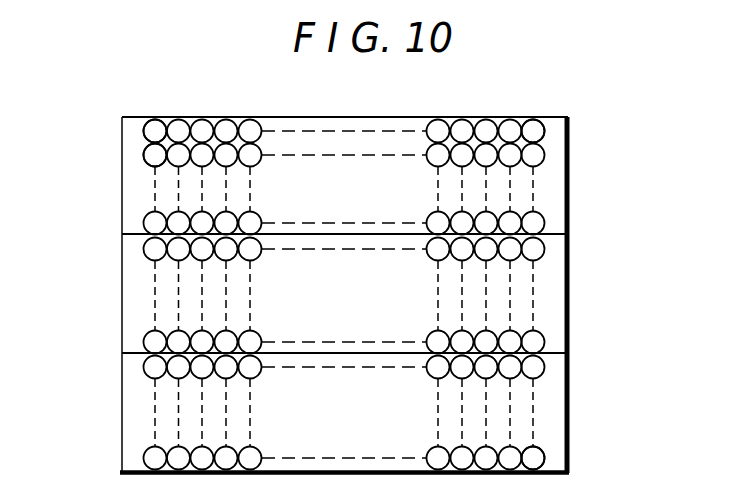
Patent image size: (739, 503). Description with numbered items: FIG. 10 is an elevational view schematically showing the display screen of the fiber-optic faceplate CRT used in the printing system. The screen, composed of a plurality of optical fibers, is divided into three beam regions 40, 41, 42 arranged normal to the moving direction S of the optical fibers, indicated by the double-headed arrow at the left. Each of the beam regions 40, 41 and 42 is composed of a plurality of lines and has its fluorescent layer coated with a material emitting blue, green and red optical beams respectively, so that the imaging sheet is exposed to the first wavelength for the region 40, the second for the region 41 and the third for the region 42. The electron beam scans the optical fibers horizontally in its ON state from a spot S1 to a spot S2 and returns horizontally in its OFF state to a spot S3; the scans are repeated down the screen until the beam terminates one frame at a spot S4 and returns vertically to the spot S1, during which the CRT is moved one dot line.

The beam region 40 is at (552, 171).
The beam region 41 is at (550, 273).
The beam region 42 is at (553, 385).
The spot S1 is at (155, 126).
The spot S2 is at (532, 128).
The spot S3 is at (152, 152).
The spot S4 is at (545, 449).
The moving direction S is at (52, 258).